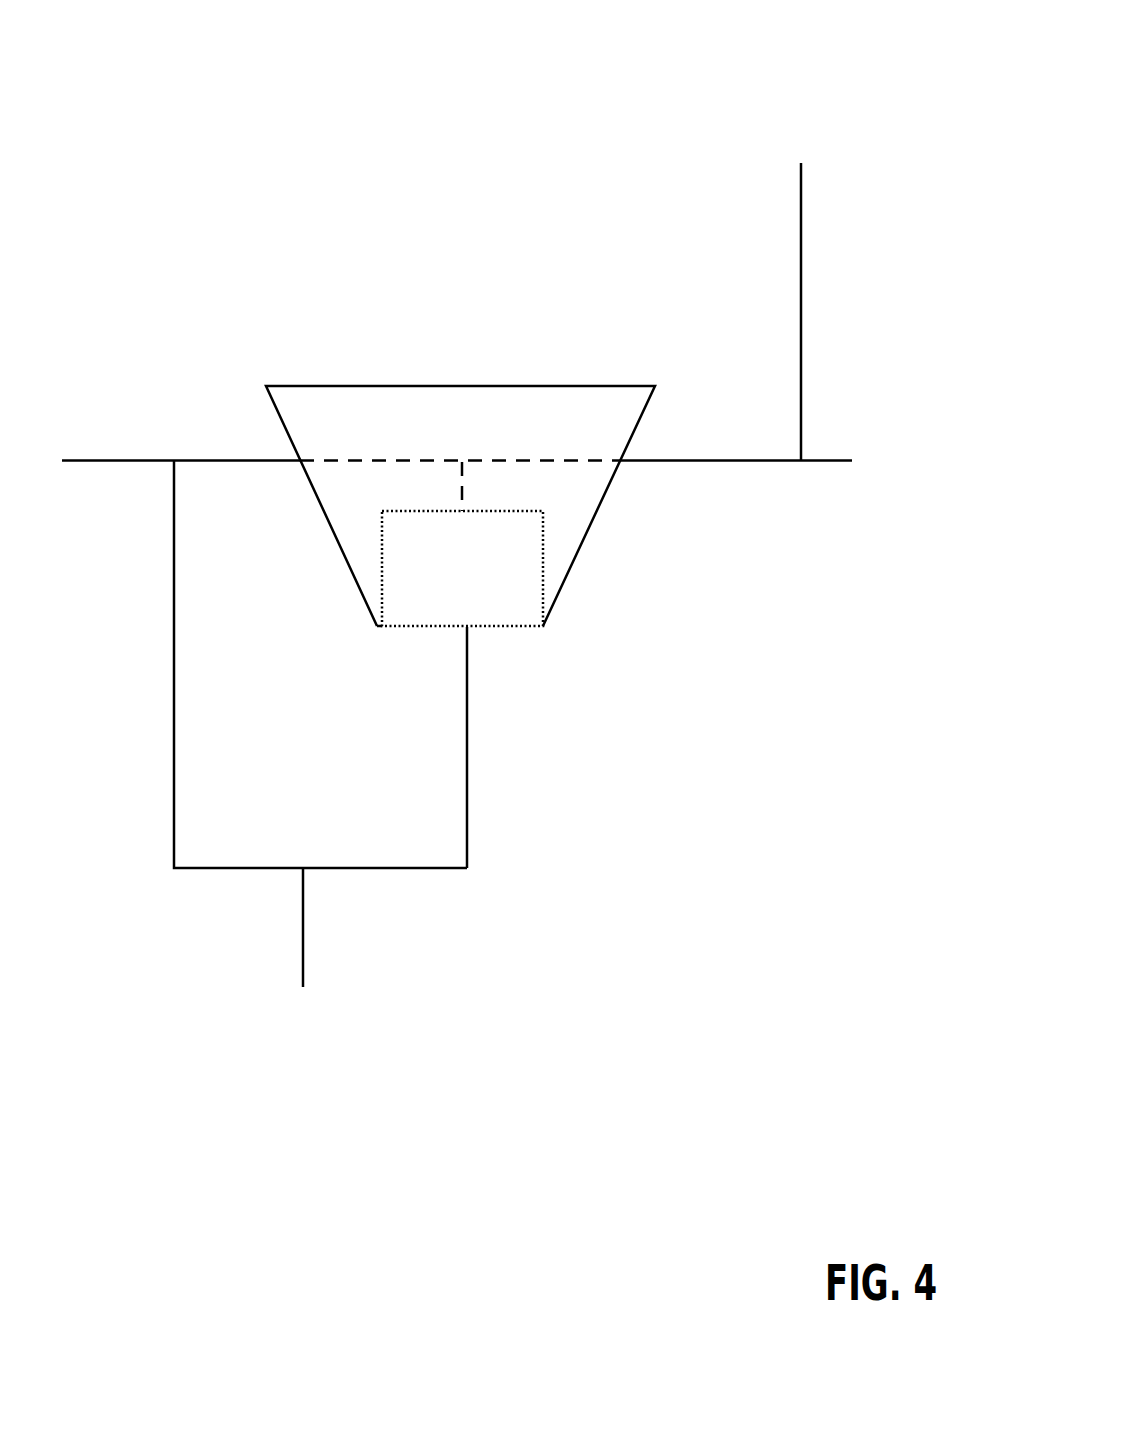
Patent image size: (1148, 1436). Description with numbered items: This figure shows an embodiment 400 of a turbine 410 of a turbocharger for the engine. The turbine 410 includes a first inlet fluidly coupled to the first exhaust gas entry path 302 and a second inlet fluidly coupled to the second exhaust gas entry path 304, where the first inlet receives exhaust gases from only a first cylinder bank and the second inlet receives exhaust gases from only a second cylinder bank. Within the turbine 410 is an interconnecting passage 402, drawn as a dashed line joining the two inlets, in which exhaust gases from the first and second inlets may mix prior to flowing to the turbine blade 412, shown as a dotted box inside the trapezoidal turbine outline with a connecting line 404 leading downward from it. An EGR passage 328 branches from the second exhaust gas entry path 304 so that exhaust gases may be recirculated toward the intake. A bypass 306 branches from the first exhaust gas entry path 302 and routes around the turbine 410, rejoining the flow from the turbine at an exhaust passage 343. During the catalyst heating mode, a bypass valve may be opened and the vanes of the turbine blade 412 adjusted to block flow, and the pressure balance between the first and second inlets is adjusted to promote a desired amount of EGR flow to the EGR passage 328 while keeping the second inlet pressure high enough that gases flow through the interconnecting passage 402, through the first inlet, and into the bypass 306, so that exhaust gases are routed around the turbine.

The embodiment 400 is at (808, 25).
The first exhaust gas entry path 302 is at (138, 459).
The second exhaust gas entry path 304 is at (842, 460).
The bypass 306 is at (174, 682).
The EGR passage 328 is at (801, 248).
The exhaust passage 343 is at (303, 947).
The interconnecting passage 402 is at (505, 459).
The outlet 404 is at (467, 740).
The turbine 410 is at (266, 386).
The turbine blade 412 is at (462, 568).